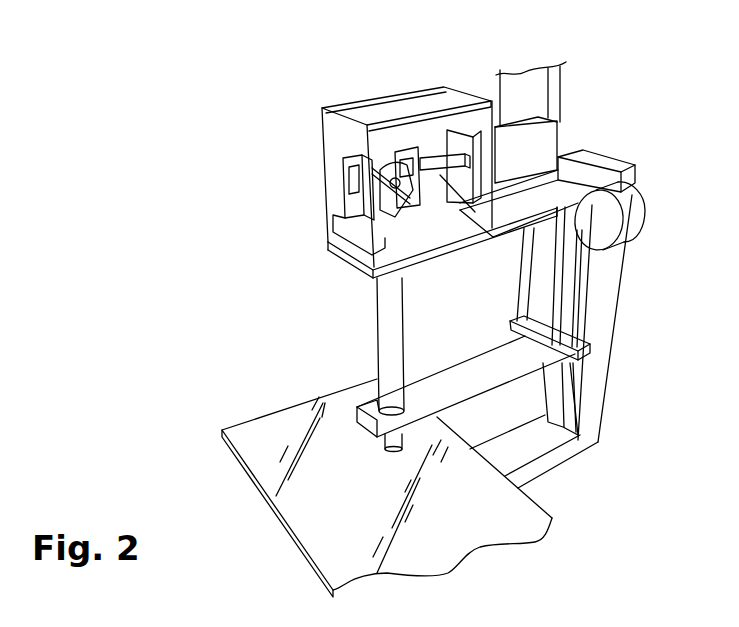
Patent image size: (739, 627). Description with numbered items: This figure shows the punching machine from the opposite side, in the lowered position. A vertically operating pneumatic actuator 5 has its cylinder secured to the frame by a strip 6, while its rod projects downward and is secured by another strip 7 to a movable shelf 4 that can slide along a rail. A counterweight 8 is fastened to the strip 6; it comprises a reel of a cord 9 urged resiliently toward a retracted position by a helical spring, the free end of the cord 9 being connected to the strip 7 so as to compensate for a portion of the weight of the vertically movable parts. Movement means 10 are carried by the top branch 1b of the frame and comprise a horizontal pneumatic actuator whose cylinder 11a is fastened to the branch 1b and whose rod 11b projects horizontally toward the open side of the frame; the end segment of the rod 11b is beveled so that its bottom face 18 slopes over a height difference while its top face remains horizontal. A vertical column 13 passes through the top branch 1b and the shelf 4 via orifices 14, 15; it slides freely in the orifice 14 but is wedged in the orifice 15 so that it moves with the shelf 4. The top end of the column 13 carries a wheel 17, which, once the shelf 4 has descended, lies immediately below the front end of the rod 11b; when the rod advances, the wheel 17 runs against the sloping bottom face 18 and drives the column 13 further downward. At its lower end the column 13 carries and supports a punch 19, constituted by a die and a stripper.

The top branch 1b is at (540, 235).
The movable shelf 4 is at (507, 366).
The pneumatic actuator 5 is at (567, 97).
The strip 6 is at (589, 175).
The strip 7 is at (593, 337).
The counterweight 8 is at (632, 217).
The cord 9 is at (582, 307).
The movement means 10 is at (313, 145).
The cylinder 11a is at (525, 140).
The rod 11b is at (440, 207).
The vertical column 13 is at (387, 342).
The orifice 14 is at (370, 247).
The orifice 15 is at (403, 393).
The wheel 17 is at (387, 170).
The bottom face 18 is at (433, 180).
The punch 19 is at (385, 447).